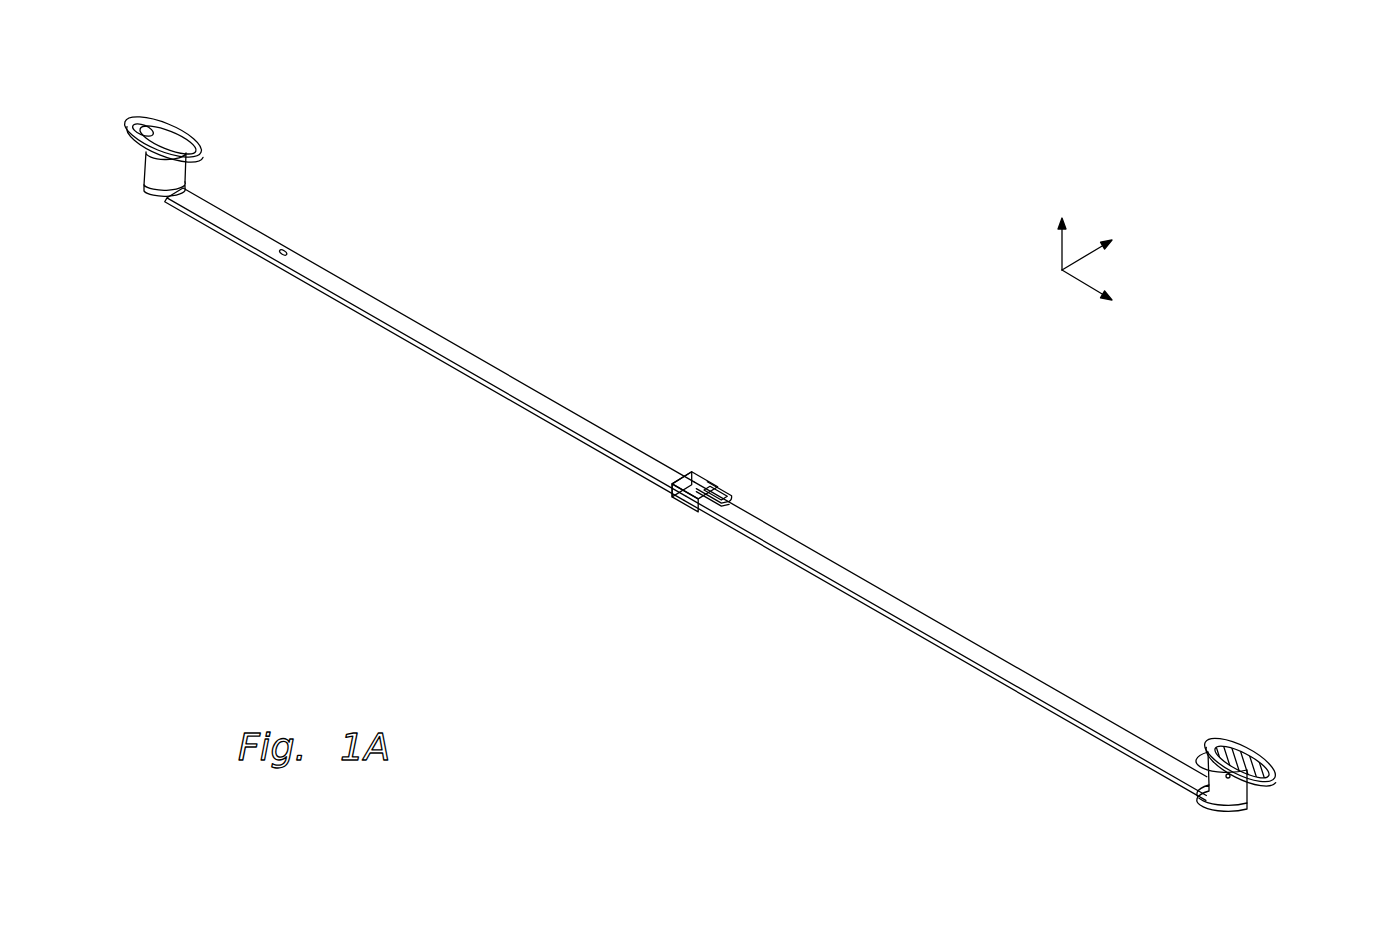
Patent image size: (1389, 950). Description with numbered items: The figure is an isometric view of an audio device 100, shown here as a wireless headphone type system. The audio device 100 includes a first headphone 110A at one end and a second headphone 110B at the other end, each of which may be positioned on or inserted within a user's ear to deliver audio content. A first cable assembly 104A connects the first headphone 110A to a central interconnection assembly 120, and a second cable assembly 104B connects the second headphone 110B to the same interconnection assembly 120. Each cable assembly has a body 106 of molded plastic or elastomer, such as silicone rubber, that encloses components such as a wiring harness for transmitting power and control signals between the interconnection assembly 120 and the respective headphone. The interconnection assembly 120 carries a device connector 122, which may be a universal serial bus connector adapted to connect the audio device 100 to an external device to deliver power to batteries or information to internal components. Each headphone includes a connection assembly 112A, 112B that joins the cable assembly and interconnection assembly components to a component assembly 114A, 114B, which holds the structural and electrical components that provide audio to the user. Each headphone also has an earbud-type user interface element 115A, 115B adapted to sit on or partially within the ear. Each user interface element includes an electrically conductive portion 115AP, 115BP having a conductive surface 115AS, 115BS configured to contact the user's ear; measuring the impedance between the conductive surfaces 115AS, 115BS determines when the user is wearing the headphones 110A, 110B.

The audio device 100 is at (376, 611).
The first cable assembly 104A is at (487, 420).
The second cable assembly 104B is at (943, 683).
The body 106 is at (428, 362).
The first headphone 110A is at (166, 225).
The second headphone 110B is at (1214, 825).
The connection assembly 112A is at (150, 193).
The connection assembly 112B is at (1237, 808).
The component assembly 114A is at (148, 165).
The component assembly 114B is at (1247, 790).
The user interface element 115A is at (217, 122).
The electrically conductive portion 115AP is at (106, 114).
The conductive surface 115AS is at (184, 140).
The user interface element 115B is at (1298, 768).
The electrically conductive portion 115BP is at (1267, 735).
The conductive surface 115BS is at (1230, 746).
The interconnection assembly 120 is at (652, 525).
The device connector 122 is at (761, 456).